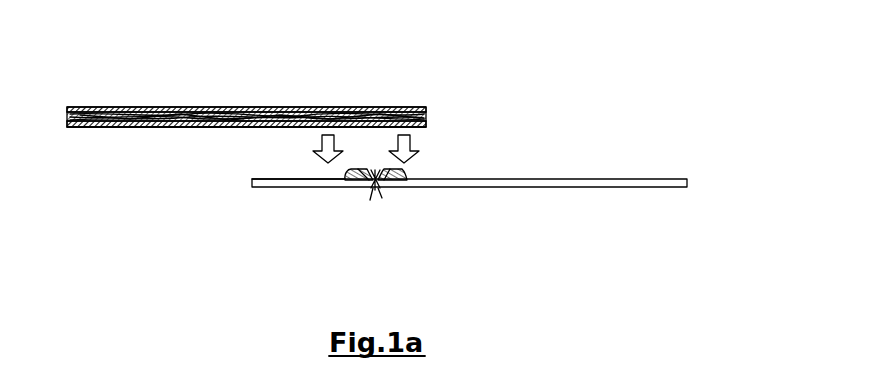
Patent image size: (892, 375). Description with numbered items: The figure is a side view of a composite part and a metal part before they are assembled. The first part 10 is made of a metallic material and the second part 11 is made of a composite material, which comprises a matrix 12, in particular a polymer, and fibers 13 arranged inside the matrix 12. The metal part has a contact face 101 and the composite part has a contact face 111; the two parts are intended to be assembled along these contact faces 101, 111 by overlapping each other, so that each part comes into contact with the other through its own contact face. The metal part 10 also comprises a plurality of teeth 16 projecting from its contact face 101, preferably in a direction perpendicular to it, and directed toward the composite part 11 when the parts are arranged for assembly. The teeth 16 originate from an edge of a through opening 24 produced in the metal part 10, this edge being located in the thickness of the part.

The first part 10 is at (494, 166).
The contact face 101 is at (313, 178).
The second part 11 is at (148, 104).
The contact face 111 is at (406, 127).
The matrix 12 is at (323, 112).
The fibers 13 is at (251, 110).
The teeth 16 is at (402, 170).
The through opening 24 is at (376, 188).